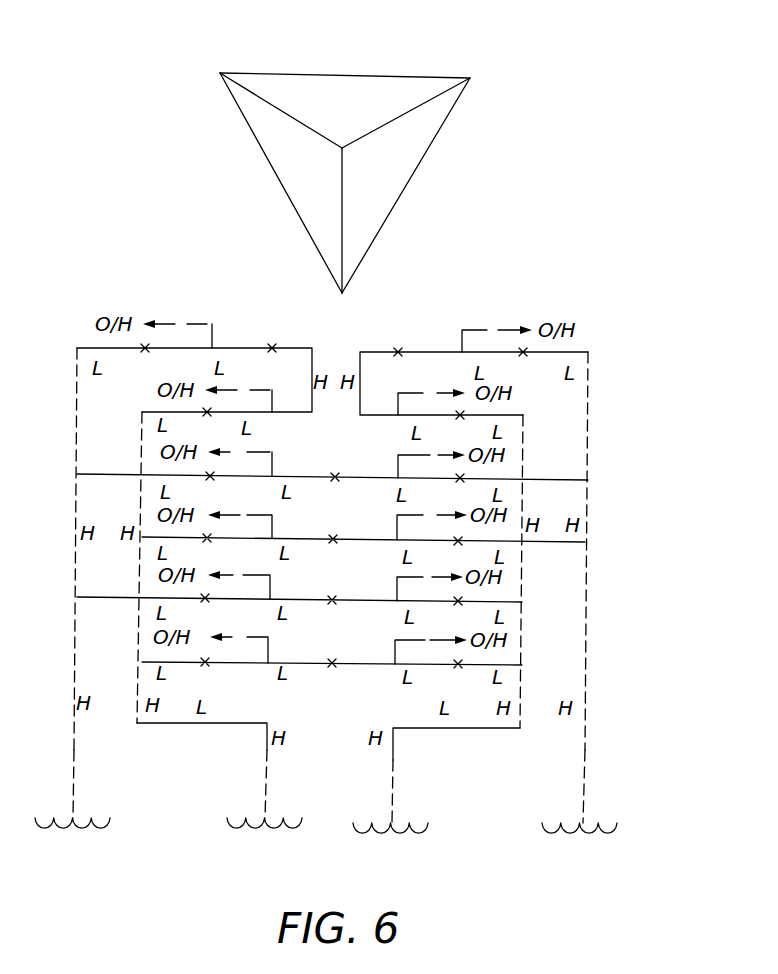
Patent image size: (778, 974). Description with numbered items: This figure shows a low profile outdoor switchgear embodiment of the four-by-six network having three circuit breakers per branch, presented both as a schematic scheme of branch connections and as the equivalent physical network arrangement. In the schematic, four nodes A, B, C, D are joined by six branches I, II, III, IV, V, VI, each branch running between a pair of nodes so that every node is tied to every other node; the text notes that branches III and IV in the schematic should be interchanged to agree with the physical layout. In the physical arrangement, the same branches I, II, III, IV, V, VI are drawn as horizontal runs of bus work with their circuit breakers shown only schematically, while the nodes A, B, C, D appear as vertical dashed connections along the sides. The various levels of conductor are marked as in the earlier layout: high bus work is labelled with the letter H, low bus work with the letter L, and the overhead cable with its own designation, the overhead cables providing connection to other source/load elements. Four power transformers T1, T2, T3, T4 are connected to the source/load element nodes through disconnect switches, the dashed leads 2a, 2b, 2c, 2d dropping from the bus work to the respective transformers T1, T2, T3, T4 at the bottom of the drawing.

The feeder branch to transformer T1 2a is at (73, 785).
The feeder branch to transformer T2 2b is at (266, 785).
The feeder branch to transformer T3 2c is at (392, 790).
The feeder branch to transformer T4 2d is at (583, 792).
The power transformer T1 is at (63, 829).
The power transformer T2 is at (257, 829).
The power transformer T3 is at (387, 834).
The power transformer T4 is at (560, 834).
The branch I is at (370, 662).
The branch II is at (368, 599).
The branch III is at (368, 539).
The branch IV is at (367, 478).
The branch V is at (355, 178).
The branch VI is at (296, 383).
The bus node A is at (220, 73).
The bus node B is at (472, 77).
The bus node C is at (343, 292).
The bus node D is at (600, 450).